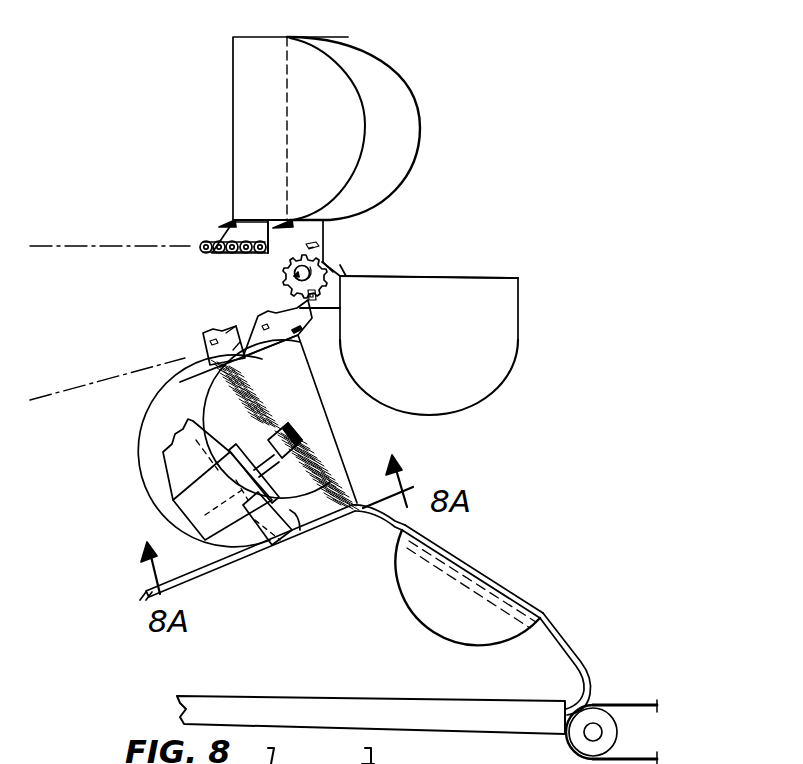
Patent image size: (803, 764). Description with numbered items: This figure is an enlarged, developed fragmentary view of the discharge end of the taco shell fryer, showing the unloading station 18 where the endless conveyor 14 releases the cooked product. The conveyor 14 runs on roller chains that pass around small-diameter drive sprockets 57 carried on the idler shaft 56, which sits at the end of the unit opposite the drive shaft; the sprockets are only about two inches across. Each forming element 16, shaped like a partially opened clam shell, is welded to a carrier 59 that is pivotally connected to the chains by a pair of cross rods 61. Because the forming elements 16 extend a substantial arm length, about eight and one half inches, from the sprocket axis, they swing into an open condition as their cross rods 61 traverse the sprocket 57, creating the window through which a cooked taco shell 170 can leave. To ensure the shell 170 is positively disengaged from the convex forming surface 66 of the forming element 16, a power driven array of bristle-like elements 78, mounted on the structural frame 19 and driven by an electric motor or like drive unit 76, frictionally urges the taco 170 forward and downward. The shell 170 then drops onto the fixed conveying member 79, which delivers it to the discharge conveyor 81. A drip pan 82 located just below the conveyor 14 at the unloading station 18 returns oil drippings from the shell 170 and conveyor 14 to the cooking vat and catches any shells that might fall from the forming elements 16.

The endless conveyor 14 is at (182, 214).
The forming element 16 is at (270, 130).
The unloading station 18 is at (414, 456).
The structural frame 19 is at (259, 696).
The idler shaft 56 is at (325, 258).
The drive sprocket 57 is at (278, 276).
The carrier 59 is at (213, 242).
The cross rod 61 is at (262, 256).
The convex forming surface 66 is at (295, 520).
The cylinder 76 is at (173, 498).
The bristle element 78 is at (330, 440).
The fixed conveying member 79 is at (557, 640).
The discharge conveyor 81 is at (628, 703).
The drip pan 82 is at (260, 563).
The taco shell 170 is at (350, 455).